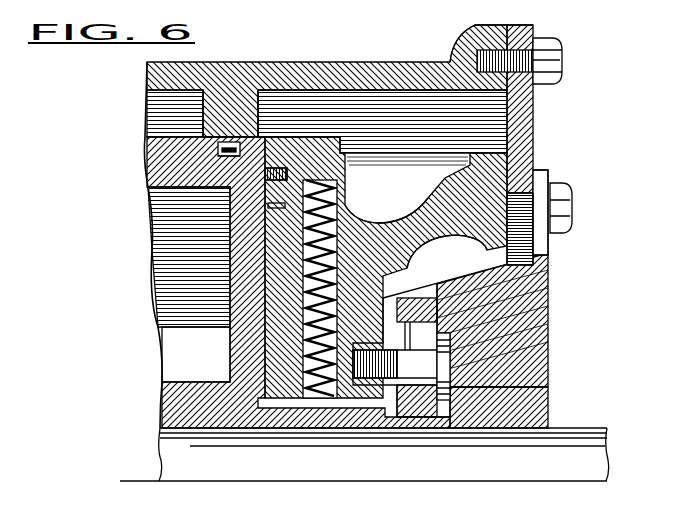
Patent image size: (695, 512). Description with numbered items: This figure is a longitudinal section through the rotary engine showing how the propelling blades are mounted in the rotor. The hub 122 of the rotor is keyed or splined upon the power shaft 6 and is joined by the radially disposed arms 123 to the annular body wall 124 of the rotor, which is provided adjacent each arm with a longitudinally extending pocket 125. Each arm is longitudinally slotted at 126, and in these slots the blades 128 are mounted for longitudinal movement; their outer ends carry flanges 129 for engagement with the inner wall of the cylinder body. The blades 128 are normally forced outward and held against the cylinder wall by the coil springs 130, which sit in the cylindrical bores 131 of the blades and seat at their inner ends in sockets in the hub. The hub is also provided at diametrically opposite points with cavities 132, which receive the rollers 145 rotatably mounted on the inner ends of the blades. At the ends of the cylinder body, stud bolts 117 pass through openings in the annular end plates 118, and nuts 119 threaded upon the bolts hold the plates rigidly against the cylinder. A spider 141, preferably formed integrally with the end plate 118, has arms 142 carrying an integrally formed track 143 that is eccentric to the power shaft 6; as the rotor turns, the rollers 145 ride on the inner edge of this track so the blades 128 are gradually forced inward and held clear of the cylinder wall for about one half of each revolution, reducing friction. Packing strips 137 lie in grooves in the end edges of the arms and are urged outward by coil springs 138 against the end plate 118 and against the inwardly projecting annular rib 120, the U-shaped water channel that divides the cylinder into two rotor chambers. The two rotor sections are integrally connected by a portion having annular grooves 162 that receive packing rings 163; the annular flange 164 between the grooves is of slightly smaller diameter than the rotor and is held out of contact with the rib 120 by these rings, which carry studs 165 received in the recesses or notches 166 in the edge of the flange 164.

The power shaft 6 is at (585, 432).
The stud bolts 117 is at (520, 52).
The annular end plates 118 is at (533, 100).
The nuts 119 is at (543, 68).
The annular rib 120 is at (213, 118).
The hub 122 is at (538, 400).
The radially disposed arms 123 is at (457, 250).
The annular body wall 124 is at (165, 137).
The longitudinally extending pocket 125 is at (147, 100).
The slots 126 is at (447, 272).
The blades 128 is at (262, 300).
The flanges 129 is at (393, 147).
The coil springs 130 is at (342, 192).
The cylindrical bores 131 is at (347, 203).
The cavities 132 is at (453, 407).
The packing strips 137 is at (523, 107).
The coil springs 138 is at (540, 147).
The spider 141 is at (550, 265).
The arms 142 is at (540, 237).
The track 143 is at (550, 292).
The rollers 145 is at (440, 323).
The annular grooves 162 is at (250, 167).
The packing rings 163 is at (240, 143).
The annular flange 164 is at (229, 163).
The studs 165 is at (232, 150).
The recesses or notches 166 is at (232, 162).